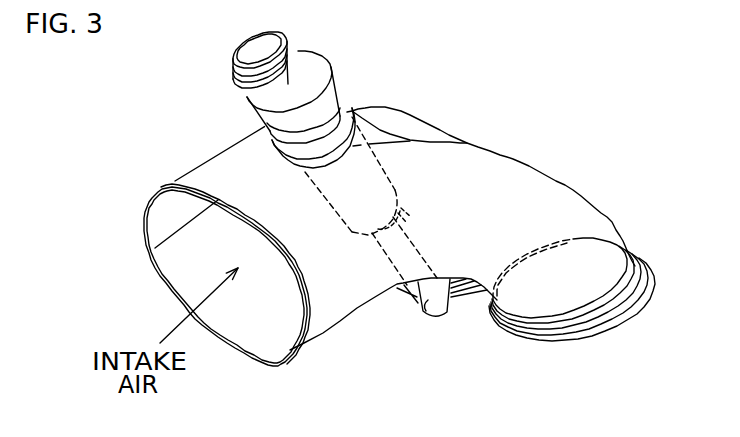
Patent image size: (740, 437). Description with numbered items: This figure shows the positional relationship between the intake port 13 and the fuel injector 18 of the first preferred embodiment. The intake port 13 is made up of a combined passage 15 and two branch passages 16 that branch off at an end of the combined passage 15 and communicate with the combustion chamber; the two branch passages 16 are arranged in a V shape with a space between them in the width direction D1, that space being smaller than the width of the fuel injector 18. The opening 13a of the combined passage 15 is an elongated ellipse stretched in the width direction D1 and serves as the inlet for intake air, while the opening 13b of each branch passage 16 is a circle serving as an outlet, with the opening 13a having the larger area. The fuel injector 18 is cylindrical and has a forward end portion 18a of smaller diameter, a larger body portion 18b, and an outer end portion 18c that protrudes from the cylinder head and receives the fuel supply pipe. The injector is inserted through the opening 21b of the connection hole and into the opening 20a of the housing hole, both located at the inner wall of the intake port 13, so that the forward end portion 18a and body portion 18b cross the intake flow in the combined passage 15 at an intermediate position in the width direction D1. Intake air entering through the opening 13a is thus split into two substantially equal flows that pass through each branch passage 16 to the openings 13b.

The intake port 13 is at (187, 176).
The opening of the combined passage 13a is at (184, 289).
The opening of the branch passage 13b is at (567, 285).
The combined passage 15 is at (237, 322).
The branch passage 16 is at (412, 128).
The fuel injector 18 is at (231, 66).
The forward end portion 18a is at (425, 306).
The body portion 18b is at (386, 170).
The outer end portion 18c is at (315, 95).
The opening of the housing hole 20a is at (370, 238).
The opening of the connection hole 21b is at (298, 167).
The width direction D1 is at (673, 205).